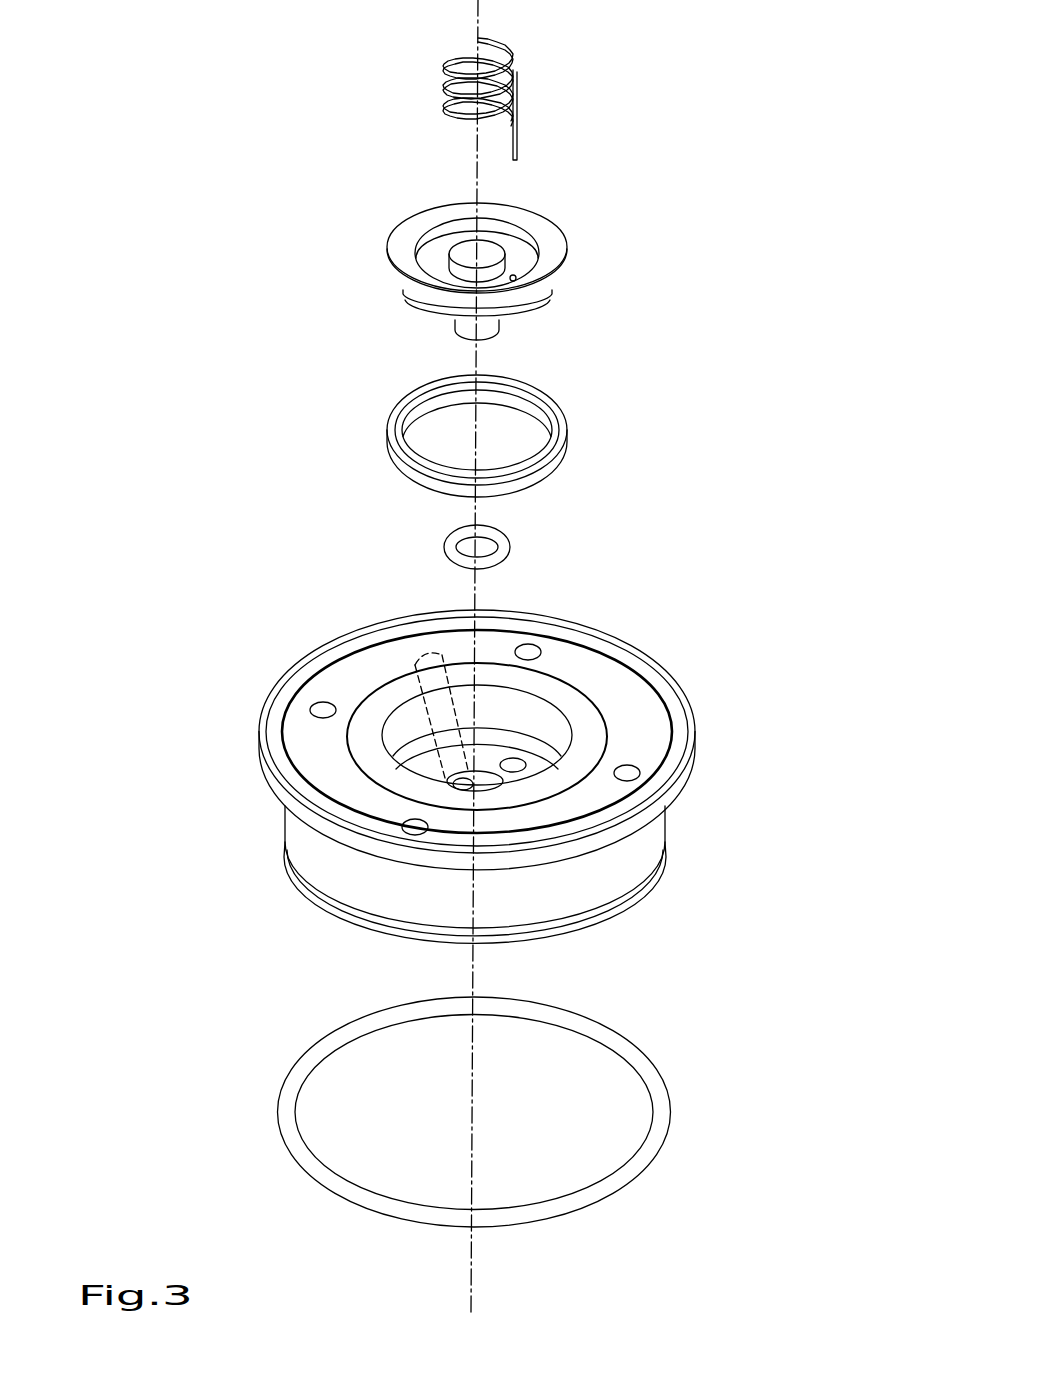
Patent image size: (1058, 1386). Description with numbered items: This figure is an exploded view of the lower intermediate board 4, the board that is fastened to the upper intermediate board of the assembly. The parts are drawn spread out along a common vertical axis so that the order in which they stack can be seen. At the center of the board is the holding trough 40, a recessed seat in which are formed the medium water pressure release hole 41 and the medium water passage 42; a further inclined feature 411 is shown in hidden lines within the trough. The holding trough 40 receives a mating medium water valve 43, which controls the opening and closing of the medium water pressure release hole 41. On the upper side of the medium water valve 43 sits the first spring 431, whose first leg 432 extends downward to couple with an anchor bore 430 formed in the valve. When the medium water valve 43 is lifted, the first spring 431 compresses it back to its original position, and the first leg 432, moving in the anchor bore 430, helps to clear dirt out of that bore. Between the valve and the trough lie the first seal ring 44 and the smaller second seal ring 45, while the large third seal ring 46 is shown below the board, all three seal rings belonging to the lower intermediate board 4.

The lower intermediate board 4 is at (784, 89).
The holding trough 40 is at (517, 710).
The medium water pressure release hole 41 is at (460, 786).
The inclined passage 411 is at (427, 712).
The medium water passage 42 is at (511, 765).
The medium water valve 43 is at (552, 243).
The anchor bore 430 is at (517, 280).
The first spring 431 is at (488, 38).
The first leg 432 is at (518, 148).
The first seal ring 44 is at (553, 411).
The second seal ring 45 is at (503, 546).
The third seal ring 46 is at (661, 1118).